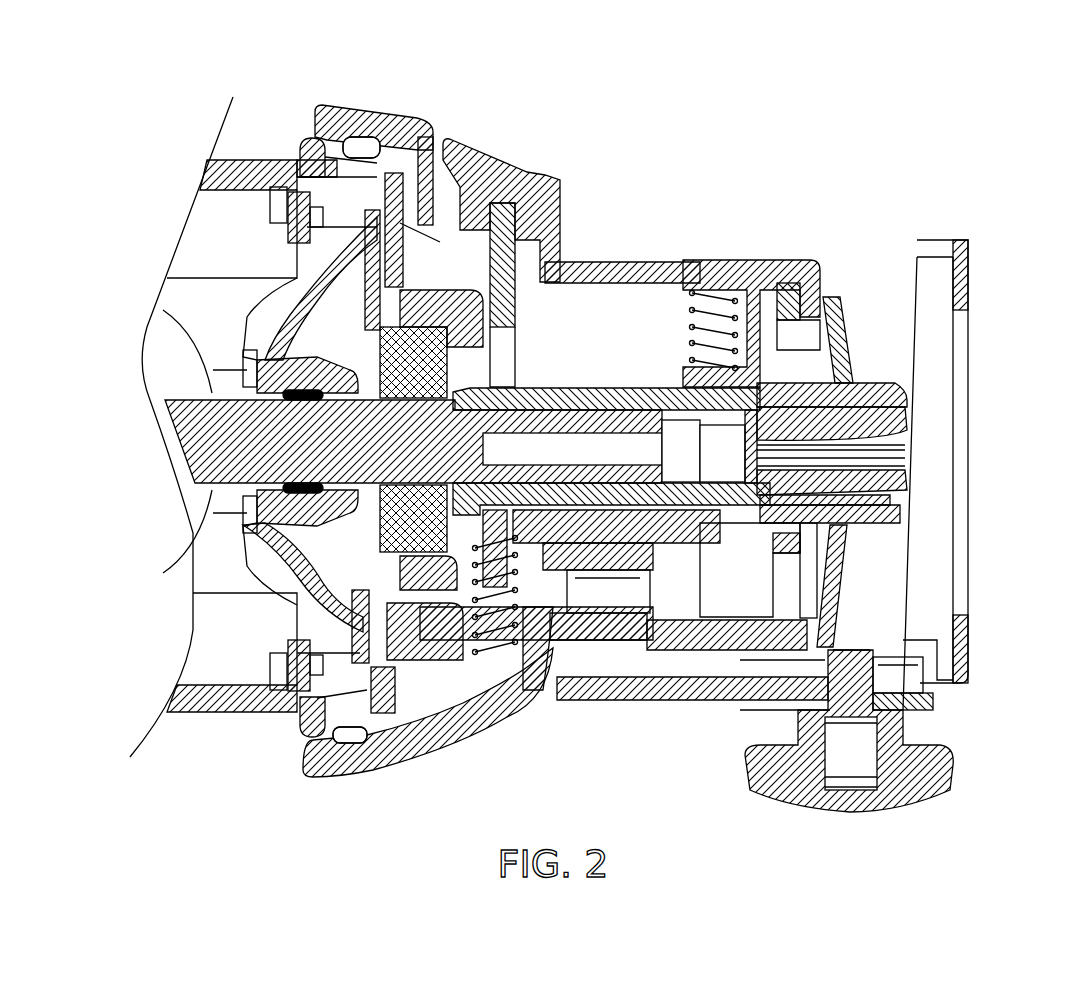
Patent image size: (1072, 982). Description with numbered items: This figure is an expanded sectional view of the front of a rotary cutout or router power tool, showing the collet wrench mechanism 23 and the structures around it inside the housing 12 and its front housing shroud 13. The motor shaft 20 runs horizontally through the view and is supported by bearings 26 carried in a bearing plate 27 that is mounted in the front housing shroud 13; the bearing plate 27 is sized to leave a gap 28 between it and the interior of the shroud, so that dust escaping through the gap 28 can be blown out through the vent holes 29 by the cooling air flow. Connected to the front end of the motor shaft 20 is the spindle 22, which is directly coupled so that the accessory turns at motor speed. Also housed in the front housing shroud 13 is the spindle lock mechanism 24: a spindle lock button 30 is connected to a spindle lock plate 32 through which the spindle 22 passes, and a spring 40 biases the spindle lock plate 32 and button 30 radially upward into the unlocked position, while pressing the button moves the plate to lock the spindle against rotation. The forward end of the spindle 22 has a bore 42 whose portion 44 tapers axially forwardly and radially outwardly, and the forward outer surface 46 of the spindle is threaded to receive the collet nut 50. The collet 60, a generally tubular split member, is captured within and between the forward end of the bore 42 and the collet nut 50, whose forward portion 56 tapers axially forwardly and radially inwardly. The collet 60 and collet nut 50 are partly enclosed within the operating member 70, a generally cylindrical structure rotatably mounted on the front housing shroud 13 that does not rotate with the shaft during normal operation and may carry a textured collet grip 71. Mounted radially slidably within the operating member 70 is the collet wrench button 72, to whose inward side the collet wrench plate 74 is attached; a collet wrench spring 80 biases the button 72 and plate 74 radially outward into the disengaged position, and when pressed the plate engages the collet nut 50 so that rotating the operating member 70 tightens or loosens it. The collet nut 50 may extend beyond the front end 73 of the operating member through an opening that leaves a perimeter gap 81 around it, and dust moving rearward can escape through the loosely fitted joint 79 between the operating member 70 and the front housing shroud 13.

The housing 12 is at (215, 715).
The front housing shroud 13 is at (455, 745).
The motor shaft 20 is at (183, 453).
The spindle 22 is at (472, 488).
The collet wrench mechanism 23 is at (833, 148).
The spindle lock mechanism 24 is at (528, 66).
The bearings 26 is at (405, 490).
The bearing plate 27 is at (383, 132).
The gap 28 is at (410, 165).
The vent holes 29 is at (362, 148).
The spindle lock button 30 is at (488, 160).
The spindle lock plate 32 is at (505, 205).
The spring 40 is at (530, 650).
The bore 42 is at (715, 515).
The portion 44 is at (752, 520).
The forward outer surface 46 is at (835, 540).
The collet nut 50 is at (883, 522).
The forward portion 56 is at (893, 483).
The collet 60 is at (893, 430).
The operating member 70 is at (685, 262).
The collet grip 71 is at (700, 652).
The collet wrench button 72 is at (764, 235).
The front end 73 is at (835, 300).
The collet wrench plate 74 is at (790, 290).
The joint 79 is at (628, 272).
The collet wrench spring 80 is at (730, 292).
The perimeter gap 81 is at (850, 385).